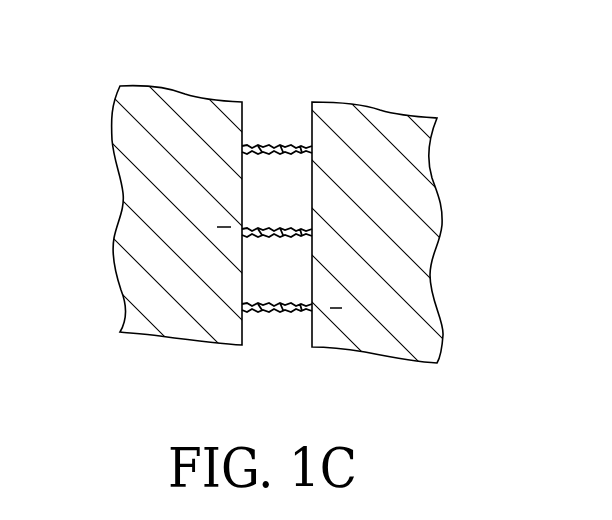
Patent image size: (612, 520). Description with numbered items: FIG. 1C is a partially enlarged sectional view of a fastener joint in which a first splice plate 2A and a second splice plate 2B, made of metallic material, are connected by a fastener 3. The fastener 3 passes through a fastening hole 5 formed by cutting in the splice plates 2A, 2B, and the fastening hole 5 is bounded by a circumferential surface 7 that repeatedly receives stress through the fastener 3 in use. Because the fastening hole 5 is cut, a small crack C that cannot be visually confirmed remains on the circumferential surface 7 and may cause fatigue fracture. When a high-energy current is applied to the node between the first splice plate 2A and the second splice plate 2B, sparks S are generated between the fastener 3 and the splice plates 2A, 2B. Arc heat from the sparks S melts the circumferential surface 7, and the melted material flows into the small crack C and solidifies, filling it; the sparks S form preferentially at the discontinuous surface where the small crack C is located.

The fastener 3 is at (200, 102).
The first splice plate 2A is at (306, 214).
The second splice plate 2B is at (355, 102).
The sparks S is at (283, 146).
The fastening hole 5 is at (282, 205).
The circumferential surface 7 is at (314, 264).
The small crack C is at (231, 227).